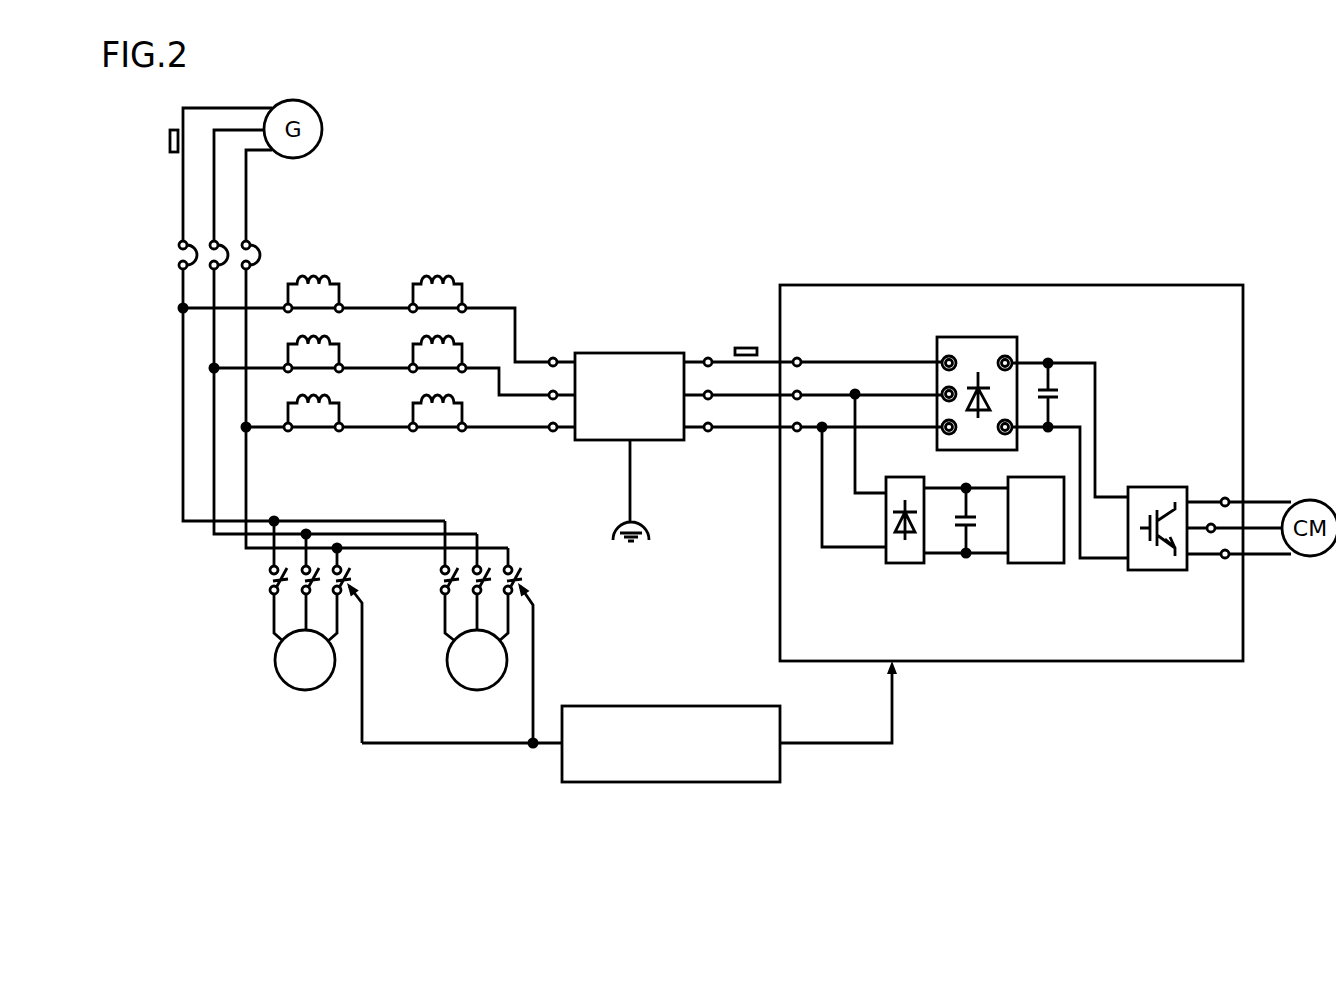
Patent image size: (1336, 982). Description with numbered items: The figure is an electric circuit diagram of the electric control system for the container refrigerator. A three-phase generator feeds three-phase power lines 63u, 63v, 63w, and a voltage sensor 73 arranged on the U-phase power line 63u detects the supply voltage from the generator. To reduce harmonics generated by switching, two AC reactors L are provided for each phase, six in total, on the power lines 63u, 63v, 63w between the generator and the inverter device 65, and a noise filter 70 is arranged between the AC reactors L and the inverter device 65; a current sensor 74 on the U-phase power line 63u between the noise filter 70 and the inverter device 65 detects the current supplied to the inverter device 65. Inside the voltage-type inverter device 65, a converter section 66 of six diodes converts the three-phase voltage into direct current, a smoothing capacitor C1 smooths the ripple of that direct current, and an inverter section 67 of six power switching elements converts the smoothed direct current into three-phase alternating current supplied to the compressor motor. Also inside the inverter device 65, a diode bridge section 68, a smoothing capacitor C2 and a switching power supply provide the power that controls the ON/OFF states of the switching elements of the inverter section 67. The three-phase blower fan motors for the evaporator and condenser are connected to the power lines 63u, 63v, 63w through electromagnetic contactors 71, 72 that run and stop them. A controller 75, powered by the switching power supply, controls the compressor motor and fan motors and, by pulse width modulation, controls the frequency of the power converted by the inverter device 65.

The U-phase power line 63u is at (183, 193).
The V-phase power line 63v is at (214, 178).
The W-phase power line 63w is at (246, 210).
The voltage sensor 73 is at (168, 140).
The AC reactor L is at (420, 275).
The noise filter 70 is at (647, 413).
The current sensor 74 is at (745, 348).
The inverter device 65 is at (1090, 285).
The converter section 66 is at (974, 337).
The smoothing capacitor C1 is at (1052, 386).
The diode bridge section 68 is at (905, 565).
The smoothing capacitor C2 is at (972, 528).
The inverter section 67 is at (1154, 487).
The electromagnetic contactor 71 is at (262, 580).
The electromagnetic contactor 72 is at (532, 577).
The controller 75 is at (670, 705).